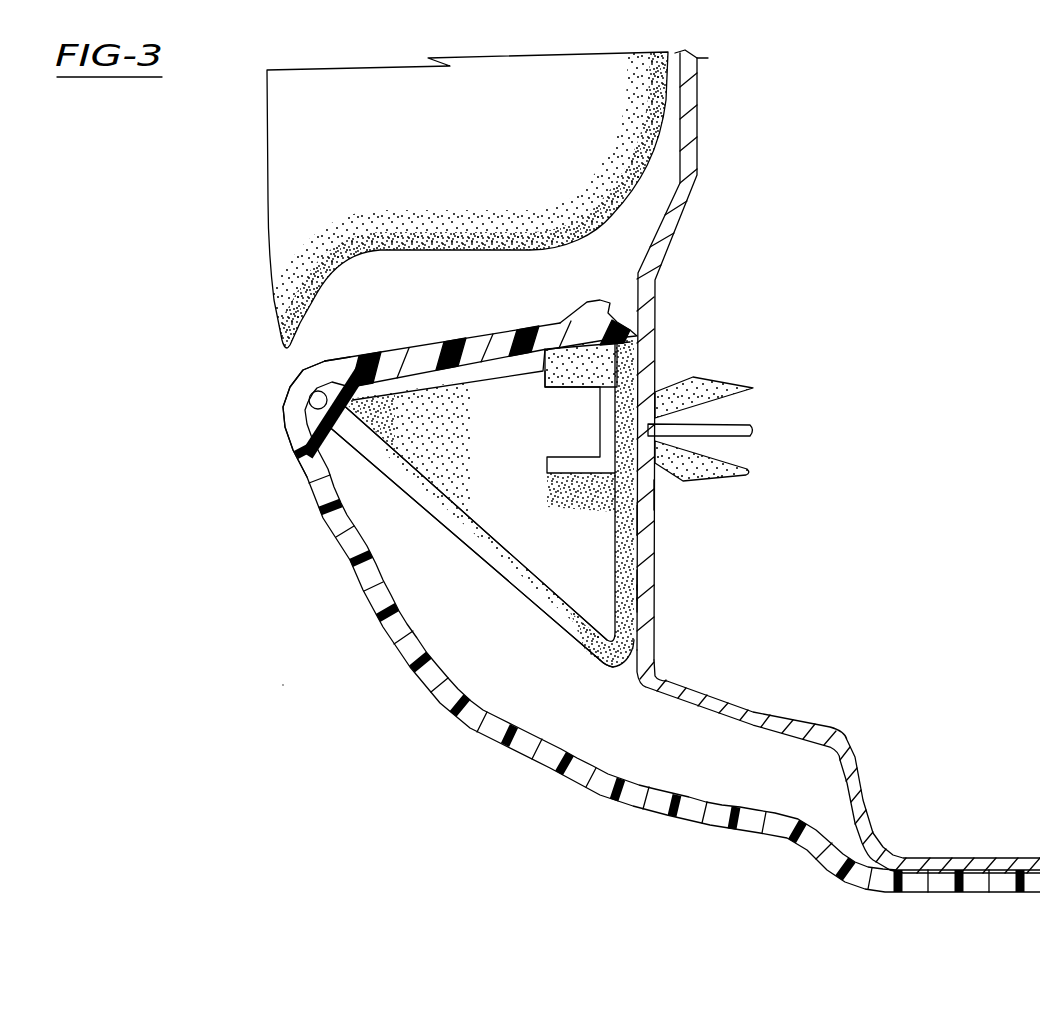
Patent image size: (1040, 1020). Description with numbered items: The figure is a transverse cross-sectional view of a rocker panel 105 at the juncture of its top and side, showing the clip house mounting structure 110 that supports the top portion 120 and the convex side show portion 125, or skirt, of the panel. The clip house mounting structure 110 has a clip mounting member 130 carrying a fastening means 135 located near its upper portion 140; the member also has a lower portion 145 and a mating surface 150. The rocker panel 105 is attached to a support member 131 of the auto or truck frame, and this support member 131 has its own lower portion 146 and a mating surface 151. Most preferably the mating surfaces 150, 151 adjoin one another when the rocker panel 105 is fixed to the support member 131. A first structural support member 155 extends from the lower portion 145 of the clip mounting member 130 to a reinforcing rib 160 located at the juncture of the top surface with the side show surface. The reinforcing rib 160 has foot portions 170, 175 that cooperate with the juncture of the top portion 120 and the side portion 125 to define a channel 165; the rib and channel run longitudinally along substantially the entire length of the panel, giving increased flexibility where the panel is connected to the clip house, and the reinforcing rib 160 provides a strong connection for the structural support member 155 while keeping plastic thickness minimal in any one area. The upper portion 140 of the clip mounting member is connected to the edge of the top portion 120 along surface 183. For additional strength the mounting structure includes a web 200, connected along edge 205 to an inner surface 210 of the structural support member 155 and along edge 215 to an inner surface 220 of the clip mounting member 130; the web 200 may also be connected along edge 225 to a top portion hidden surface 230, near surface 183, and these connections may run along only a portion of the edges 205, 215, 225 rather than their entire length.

The rocker panel 105 is at (352, 655).
The clip house mounting structure 110 is at (647, 557).
The top portion 120 is at (505, 345).
The convex side show portion 125 is at (353, 573).
The clip mounting member 130 is at (648, 495).
The support member 131 is at (648, 520).
The fastening means 135 is at (688, 400).
The upper portion 140 is at (633, 352).
The lower portion 145 is at (647, 633).
The lower portion 146 is at (647, 593).
The mating surface 150 is at (645, 580).
The mating surface 151 is at (650, 605).
The first structural support member 155 is at (560, 620).
The reinforcing rib 160 is at (320, 416).
The channel 165 is at (303, 390).
The foot portion 170 is at (347, 390).
The foot portion 175 is at (312, 412).
The surface 183 is at (630, 340).
The web 200 is at (460, 540).
The edge 205 is at (405, 457).
The inner surface 210 is at (457, 502).
The edge 215 is at (612, 521).
The inner surface 220 is at (608, 603).
The edge 225 is at (530, 378).
The top portion hidden surface 230 is at (457, 378).